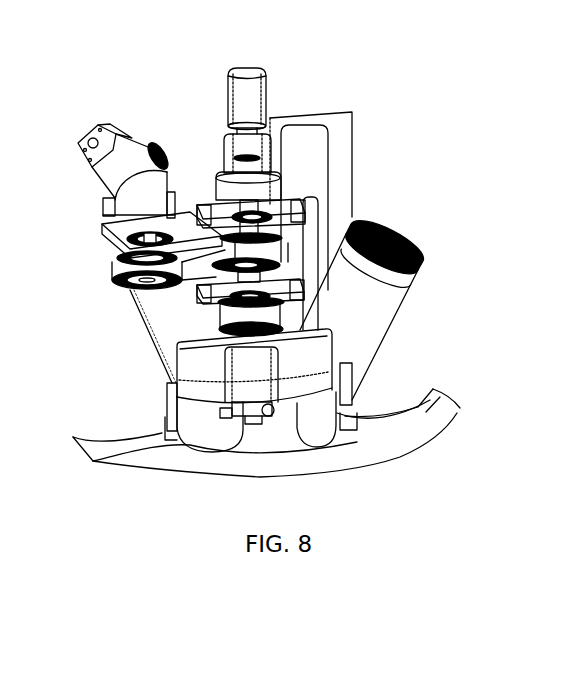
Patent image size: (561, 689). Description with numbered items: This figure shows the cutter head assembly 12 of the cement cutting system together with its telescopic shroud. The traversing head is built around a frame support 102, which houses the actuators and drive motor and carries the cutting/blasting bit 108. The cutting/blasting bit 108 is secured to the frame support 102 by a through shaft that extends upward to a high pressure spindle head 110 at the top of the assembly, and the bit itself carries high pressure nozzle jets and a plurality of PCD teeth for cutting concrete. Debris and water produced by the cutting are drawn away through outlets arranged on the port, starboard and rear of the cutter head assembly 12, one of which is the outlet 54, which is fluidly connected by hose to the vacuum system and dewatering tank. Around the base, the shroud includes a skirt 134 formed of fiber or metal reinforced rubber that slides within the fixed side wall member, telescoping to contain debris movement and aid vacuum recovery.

The cutter head assembly 12 is at (431, 343).
The outlet 54 is at (413, 236).
The frame support 102 is at (356, 146).
The cutting/blasting bit 108 is at (218, 384).
The high pressure spindle head 110 is at (268, 82).
The skirt 134 is at (452, 392).